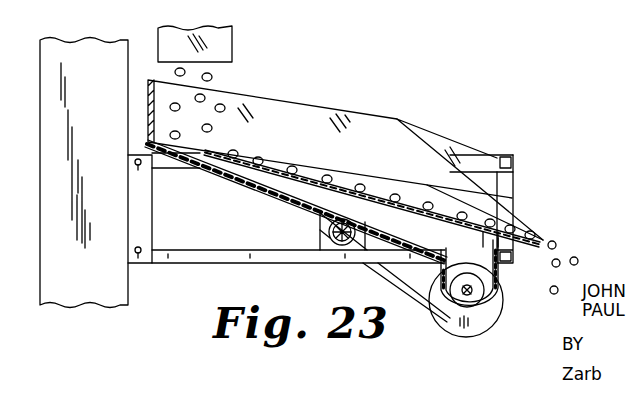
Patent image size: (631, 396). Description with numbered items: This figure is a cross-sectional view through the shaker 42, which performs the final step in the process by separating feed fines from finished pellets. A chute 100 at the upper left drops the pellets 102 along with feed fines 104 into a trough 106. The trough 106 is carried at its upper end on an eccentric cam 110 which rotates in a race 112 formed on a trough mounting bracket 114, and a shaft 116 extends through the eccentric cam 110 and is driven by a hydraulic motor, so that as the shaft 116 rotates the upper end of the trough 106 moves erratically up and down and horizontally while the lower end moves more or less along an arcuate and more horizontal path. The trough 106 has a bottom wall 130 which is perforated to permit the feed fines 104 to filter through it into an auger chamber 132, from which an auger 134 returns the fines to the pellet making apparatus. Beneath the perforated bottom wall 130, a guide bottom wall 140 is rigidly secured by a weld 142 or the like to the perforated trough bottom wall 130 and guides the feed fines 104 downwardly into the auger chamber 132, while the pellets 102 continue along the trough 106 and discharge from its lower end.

The shaker 42 is at (552, 170).
The chute 100 is at (223, 40).
The pellets 102 is at (225, 107).
The feed fines 104 is at (232, 95).
The trough 106 is at (363, 127).
The eccentric cam 110 is at (338, 250).
The race 112 is at (322, 240).
The trough mounting bracket 114 is at (320, 215).
The shaft 116 is at (348, 264).
The bottom wall 130 is at (405, 203).
The auger chamber 132 is at (470, 263).
The auger 134 is at (444, 333).
The guide bottom wall 140 is at (273, 190).
The weld 142 is at (197, 162).